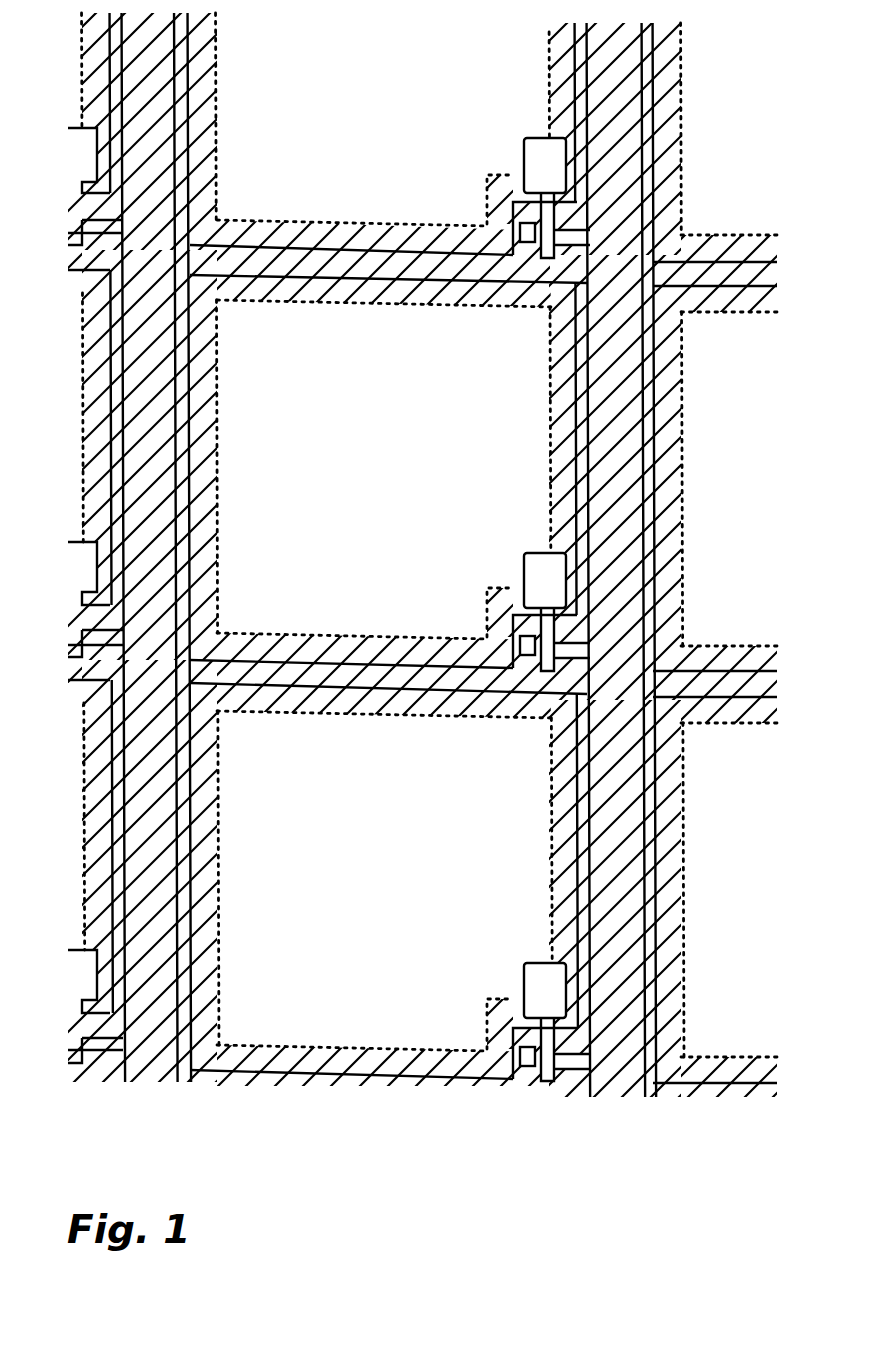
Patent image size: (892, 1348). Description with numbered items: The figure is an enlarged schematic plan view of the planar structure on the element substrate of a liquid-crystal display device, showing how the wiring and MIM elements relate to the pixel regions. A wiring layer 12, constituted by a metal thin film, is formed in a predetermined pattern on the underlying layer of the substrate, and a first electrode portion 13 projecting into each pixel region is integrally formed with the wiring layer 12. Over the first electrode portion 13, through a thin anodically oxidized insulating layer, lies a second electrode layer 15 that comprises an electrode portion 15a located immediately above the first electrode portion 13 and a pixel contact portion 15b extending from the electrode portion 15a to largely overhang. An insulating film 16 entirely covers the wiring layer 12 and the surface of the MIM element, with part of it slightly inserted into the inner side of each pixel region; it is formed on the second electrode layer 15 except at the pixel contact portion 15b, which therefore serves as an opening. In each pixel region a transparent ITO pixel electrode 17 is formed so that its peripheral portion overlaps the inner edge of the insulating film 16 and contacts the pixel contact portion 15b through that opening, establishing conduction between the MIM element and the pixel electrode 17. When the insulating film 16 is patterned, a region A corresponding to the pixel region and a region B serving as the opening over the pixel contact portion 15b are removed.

The wiring layer 12 is at (648, 456).
The first electrode portion 13 is at (570, 1080).
The second electrode layer 15 is at (510, 1076).
The electrode portion 15a is at (513, 712).
The pixel contact portion 15b is at (525, 973).
The insulating film 16 is at (330, 795).
The pixel electrode 17 is at (297, 1087).
The region A is at (360, 462).
The region B is at (543, 572).